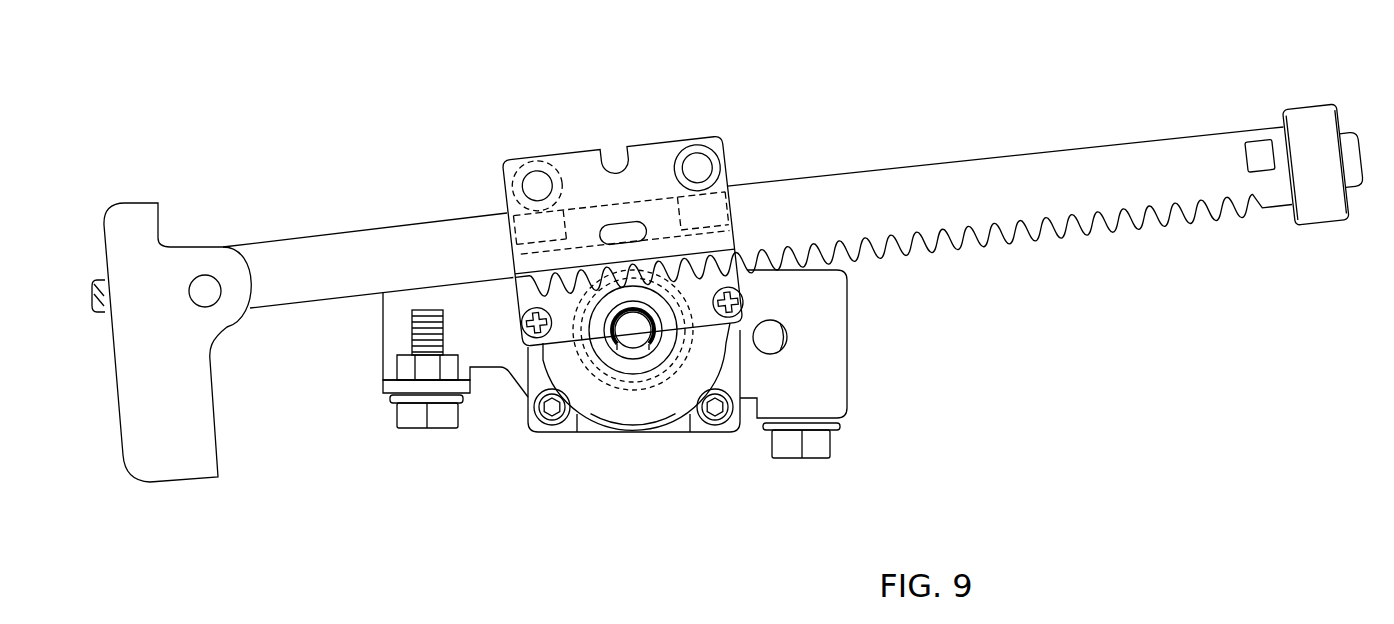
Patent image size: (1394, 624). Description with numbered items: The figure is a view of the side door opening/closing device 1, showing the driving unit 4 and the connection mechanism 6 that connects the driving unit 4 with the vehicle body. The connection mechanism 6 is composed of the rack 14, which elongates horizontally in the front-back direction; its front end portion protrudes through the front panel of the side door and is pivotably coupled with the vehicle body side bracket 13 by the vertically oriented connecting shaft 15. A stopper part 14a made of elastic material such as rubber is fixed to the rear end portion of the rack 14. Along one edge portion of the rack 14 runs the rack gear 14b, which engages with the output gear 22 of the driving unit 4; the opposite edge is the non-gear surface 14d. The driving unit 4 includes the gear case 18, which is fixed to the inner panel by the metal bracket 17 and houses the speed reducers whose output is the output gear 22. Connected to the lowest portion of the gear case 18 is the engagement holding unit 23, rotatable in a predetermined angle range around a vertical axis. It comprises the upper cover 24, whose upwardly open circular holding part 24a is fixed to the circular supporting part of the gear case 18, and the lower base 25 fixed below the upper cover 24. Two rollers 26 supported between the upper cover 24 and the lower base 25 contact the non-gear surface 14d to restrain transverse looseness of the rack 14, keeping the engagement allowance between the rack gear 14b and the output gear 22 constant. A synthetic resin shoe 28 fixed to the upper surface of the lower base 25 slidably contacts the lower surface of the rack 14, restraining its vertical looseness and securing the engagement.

The side door opening/closing device 1 is at (770, 143).
The driving unit 4 is at (582, 296).
The connection mechanism 6 is at (1145, 140).
The vehicle body side bracket 13 is at (190, 483).
The rack 14 is at (800, 214).
The stopper part 14a is at (1327, 225).
The rack gear 14b is at (1050, 237).
The non-gear surface 14d is at (943, 165).
The connecting shaft 15 is at (205, 275).
The bracket 17 is at (848, 360).
The gear case 18 is at (585, 432).
The output gear 22 is at (623, 397).
The engagement holding unit 23 is at (660, 135).
The upper cover 24 is at (673, 420).
The holding part 24a is at (712, 405).
The lower base 25 is at (573, 157).
The rollers 26 is at (517, 152).
The shoe 28 is at (655, 200).